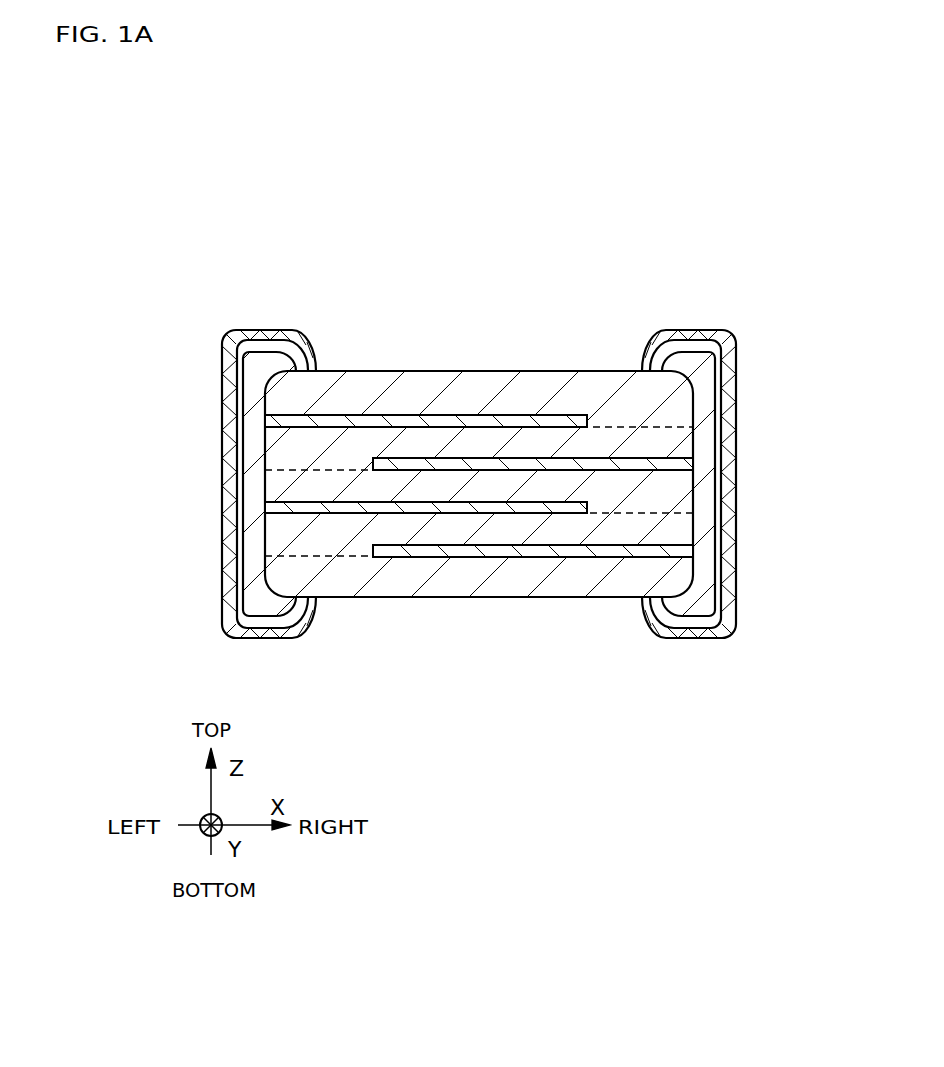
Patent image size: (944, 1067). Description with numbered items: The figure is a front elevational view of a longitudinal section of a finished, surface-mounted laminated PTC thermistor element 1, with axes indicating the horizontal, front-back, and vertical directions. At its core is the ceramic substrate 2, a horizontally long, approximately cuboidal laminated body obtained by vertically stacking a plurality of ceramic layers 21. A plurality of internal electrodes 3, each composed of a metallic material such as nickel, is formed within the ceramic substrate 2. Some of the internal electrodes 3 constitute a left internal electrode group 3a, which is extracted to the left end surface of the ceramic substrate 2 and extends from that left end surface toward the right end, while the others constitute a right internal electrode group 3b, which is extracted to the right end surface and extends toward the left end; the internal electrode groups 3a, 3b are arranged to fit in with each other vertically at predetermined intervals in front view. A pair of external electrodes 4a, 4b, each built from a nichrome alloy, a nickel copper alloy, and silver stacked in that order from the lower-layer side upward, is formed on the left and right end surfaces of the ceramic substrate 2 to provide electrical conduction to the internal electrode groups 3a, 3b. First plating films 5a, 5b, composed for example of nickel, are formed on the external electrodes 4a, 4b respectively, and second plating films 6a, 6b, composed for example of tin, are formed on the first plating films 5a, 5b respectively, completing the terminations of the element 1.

The laminated PTC thermistor element 1 is at (222, 201).
The ceramic substrate 2 is at (790, 384).
The ceramic layer 21 is at (683, 410).
The internal electrode 3 is at (482, 412).
The left internal electrode group 3a is at (350, 514).
The right internal electrode group 3b is at (653, 545).
The external electrode 4a is at (291, 362).
The external electrode 4b is at (684, 357).
The first plating film 5a is at (238, 643).
The first plating film 5b is at (687, 638).
The second plating film 6a is at (288, 640).
The second plating film 6b is at (727, 638).